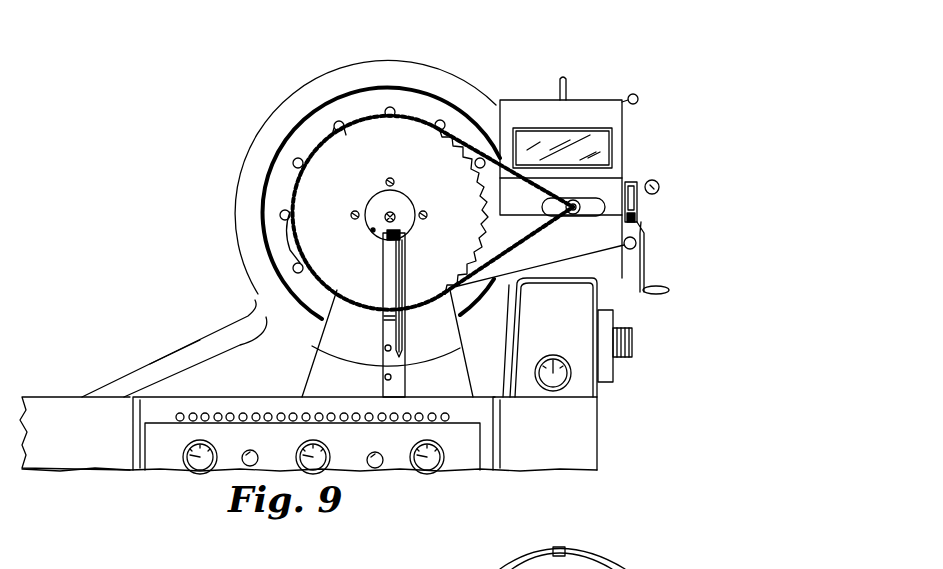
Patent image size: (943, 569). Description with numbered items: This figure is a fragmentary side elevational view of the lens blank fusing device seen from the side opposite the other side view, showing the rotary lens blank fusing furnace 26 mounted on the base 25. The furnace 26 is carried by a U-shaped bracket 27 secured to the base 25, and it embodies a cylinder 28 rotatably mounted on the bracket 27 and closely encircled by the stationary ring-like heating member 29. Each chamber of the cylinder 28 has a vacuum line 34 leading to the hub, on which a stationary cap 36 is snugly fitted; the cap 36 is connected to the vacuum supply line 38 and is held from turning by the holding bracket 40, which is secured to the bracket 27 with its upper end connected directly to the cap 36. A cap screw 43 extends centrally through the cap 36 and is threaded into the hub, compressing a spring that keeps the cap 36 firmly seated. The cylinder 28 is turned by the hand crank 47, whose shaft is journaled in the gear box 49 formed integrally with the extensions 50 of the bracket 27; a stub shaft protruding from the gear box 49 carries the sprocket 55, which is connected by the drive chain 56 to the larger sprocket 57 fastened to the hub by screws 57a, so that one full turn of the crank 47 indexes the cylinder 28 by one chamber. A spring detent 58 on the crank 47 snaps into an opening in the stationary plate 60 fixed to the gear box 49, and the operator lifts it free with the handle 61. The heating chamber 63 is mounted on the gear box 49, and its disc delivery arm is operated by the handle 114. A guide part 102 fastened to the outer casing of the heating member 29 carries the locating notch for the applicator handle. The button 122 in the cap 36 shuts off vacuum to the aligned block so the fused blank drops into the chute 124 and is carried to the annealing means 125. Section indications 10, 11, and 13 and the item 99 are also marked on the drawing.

The rotary lens blank fusing furnace 26 is at (459, 53).
The heating member 29 is at (365, 69).
The cylinder 28 is at (262, 172).
The vacuum line 34 is at (298, 158).
The section line 10 is at (663, 145).
The heating chamber 63 is at (591, 92).
The gear box 49 is at (610, 194).
The handle 61 is at (660, 186).
The spring detent 58 is at (640, 197).
The stationary plate 60 is at (637, 218).
The handle 114 is at (637, 243).
The hand crank 47 is at (646, 270).
The extensions 50 is at (603, 251).
The sprocket 55 is at (574, 214).
The drive chain 56 is at (520, 251).
The sprocket 57 is at (421, 297).
The screws 57a is at (391, 178).
The cap 36 is at (402, 198).
The cap screw 43 is at (396, 216).
The vacuum supply line 38 is at (407, 246).
The holding bracket 40 is at (403, 264).
The button 122 is at (371, 230).
The section line 11 is at (374, 193).
The guide part 102 is at (245, 295).
The chute 124 is at (172, 355).
The U-shaped bracket 27 is at (322, 361).
The base 25 is at (582, 430).
The annealing means 125 is at (52, 402).
The section arrow 13 is at (580, 531).
The fitting 99 is at (566, 551).